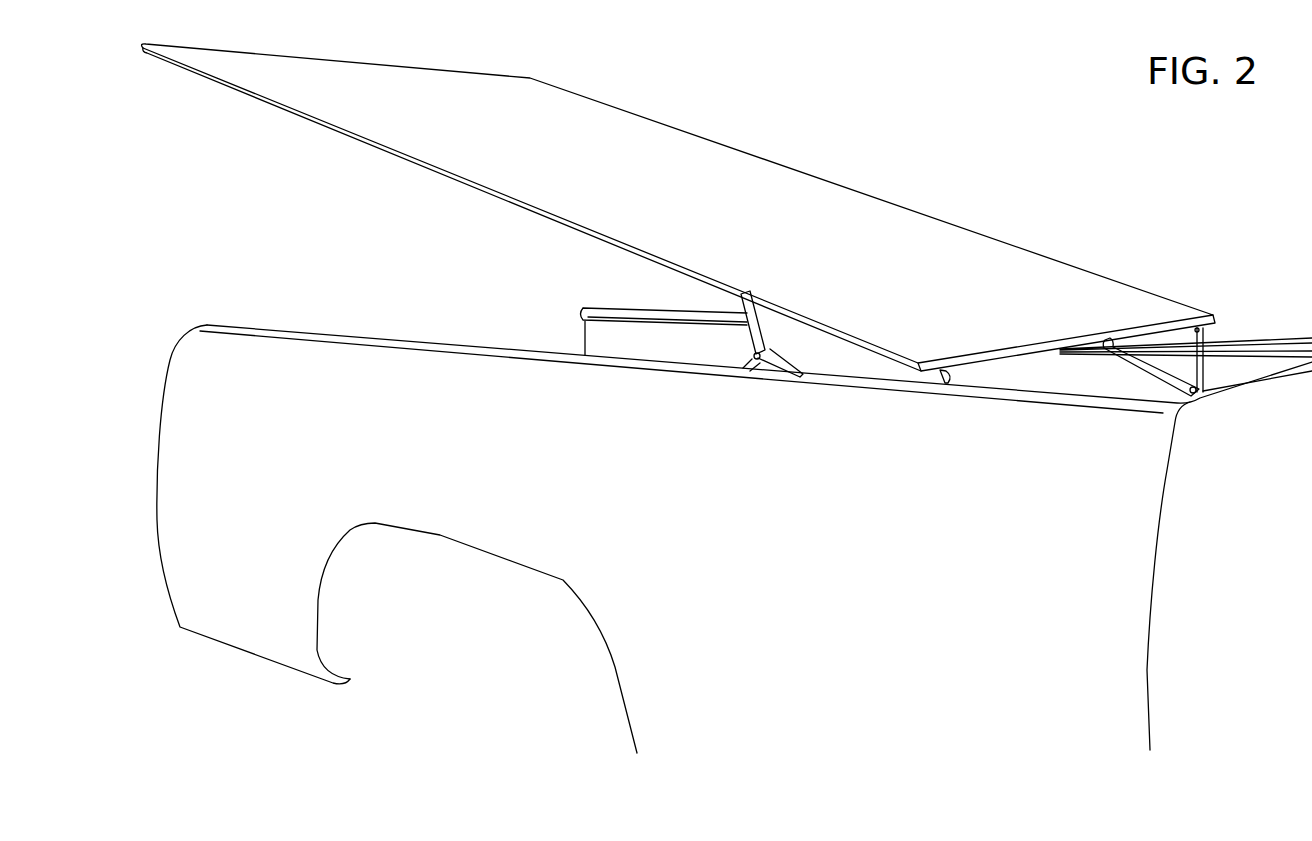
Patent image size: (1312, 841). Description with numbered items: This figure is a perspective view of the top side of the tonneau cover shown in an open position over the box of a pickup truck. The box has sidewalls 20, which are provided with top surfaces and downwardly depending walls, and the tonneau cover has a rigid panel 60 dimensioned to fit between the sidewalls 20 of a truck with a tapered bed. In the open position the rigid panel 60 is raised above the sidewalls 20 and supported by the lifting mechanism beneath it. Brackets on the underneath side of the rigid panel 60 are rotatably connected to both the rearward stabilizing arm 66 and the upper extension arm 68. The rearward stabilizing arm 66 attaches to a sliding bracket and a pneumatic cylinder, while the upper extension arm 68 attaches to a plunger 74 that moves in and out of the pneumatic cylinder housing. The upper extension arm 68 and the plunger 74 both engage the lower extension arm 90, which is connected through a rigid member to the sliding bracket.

The sidewalls 20 is at (734, 530).
The rigid panel 60 is at (709, 218).
The rearward stabilizing arm 66 is at (1198, 370).
The upper extension arm 68 is at (758, 331).
The plunger 74 is at (772, 362).
The lower extension arm 90 is at (748, 363).